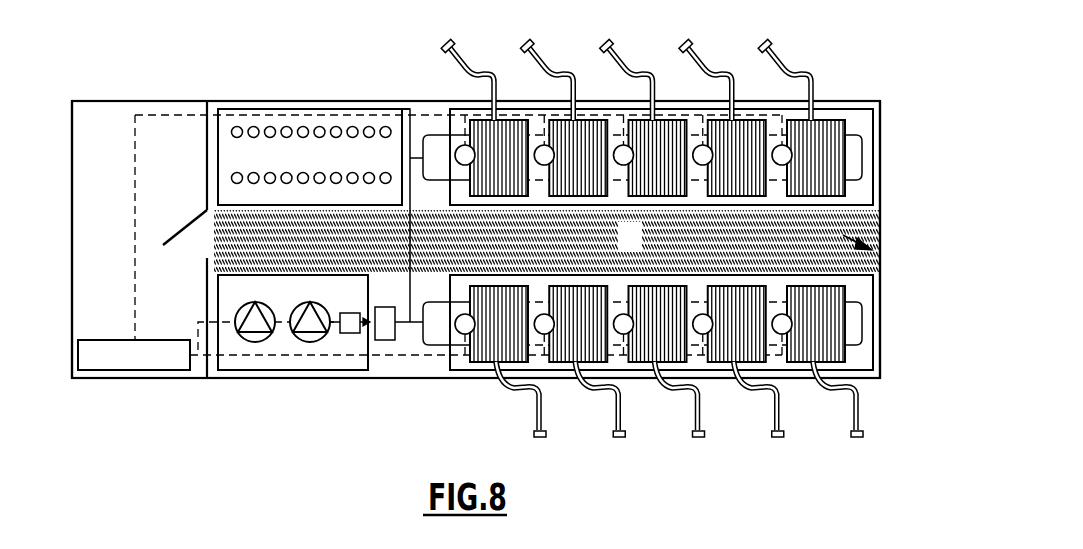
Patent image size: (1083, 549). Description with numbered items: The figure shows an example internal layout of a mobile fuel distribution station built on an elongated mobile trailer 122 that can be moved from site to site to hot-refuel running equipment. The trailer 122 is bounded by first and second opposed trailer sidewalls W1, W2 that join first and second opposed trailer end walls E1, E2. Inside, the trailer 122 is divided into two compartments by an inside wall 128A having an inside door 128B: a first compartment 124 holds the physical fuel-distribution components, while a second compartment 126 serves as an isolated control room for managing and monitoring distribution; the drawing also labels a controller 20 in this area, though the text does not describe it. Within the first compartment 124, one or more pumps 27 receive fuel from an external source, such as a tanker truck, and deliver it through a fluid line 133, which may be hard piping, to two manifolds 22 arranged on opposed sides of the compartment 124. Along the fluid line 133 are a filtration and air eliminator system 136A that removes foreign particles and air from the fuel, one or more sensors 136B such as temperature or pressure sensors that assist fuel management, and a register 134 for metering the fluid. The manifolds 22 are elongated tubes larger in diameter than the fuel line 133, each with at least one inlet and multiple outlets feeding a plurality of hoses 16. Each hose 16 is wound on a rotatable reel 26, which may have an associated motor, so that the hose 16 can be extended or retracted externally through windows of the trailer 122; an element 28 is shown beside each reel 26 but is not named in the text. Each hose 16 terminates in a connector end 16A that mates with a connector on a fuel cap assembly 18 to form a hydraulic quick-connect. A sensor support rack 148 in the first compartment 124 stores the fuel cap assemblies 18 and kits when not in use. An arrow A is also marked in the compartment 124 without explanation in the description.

The hose 16 is at (484, 76).
The connector end 16A is at (604, 44).
The fuel cap assembly 18 is at (336, 127).
The controller 20 is at (118, 371).
The manifold 22 is at (423, 136).
The reel 26 is at (510, 118).
The pump 27 is at (289, 344).
The fan 28 is at (463, 143).
The mobile trailer 122 is at (372, 94).
The first compartment 124 is at (880, 262).
The second compartment 126 is at (91, 237).
The inside wall 128A is at (204, 122).
The inside door 128B is at (191, 218).
The fluid line 133 is at (405, 325).
The register 134 is at (384, 342).
The filtration and air eliminator system 136A is at (350, 334).
The sensor 136B is at (362, 312).
The sensor support rack 148 is at (268, 108).
The first trailer sidewall W1 is at (230, 100).
The second trailer sidewall W2 is at (296, 372).
The first trailer end wall E1 is at (880, 119).
The second trailer end wall E2 is at (72, 118).
The airflow direction A is at (745, 238).